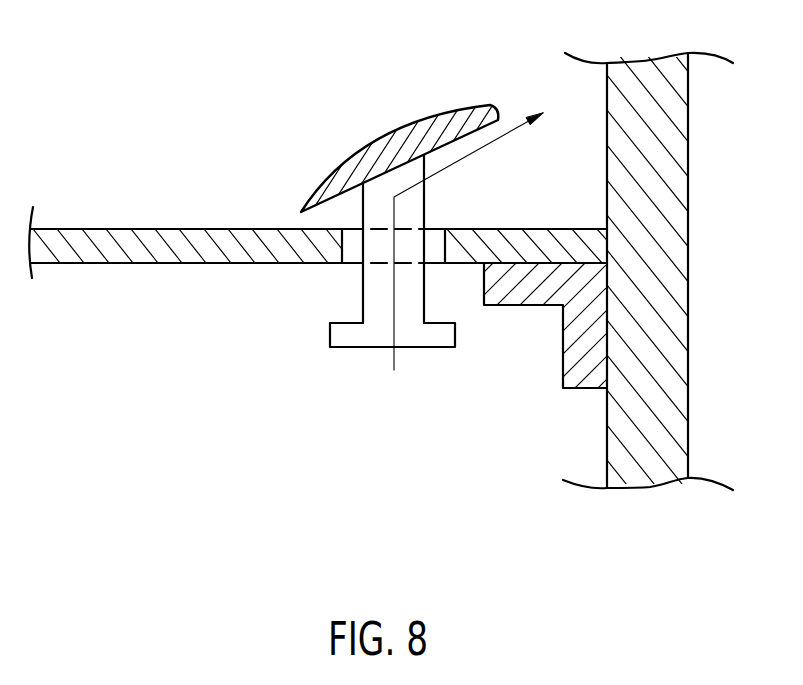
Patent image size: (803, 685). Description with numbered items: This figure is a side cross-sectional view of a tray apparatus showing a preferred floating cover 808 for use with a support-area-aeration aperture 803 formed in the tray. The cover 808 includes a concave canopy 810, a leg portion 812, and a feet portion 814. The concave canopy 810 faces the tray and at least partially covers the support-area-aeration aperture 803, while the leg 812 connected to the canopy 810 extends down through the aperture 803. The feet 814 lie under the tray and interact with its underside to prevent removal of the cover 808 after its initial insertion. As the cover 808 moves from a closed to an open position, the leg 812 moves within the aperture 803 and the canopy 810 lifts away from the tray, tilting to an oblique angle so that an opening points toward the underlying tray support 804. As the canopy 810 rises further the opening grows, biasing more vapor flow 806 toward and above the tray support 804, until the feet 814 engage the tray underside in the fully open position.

The support-area-aeration aperture 803 is at (362, 265).
The tray support 804 is at (583, 363).
The vapor flow 806 is at (506, 127).
The floating cover 808 is at (322, 257).
The concave canopy 810 is at (383, 138).
The leg portion 812 is at (377, 293).
The feet portion 814 is at (372, 338).